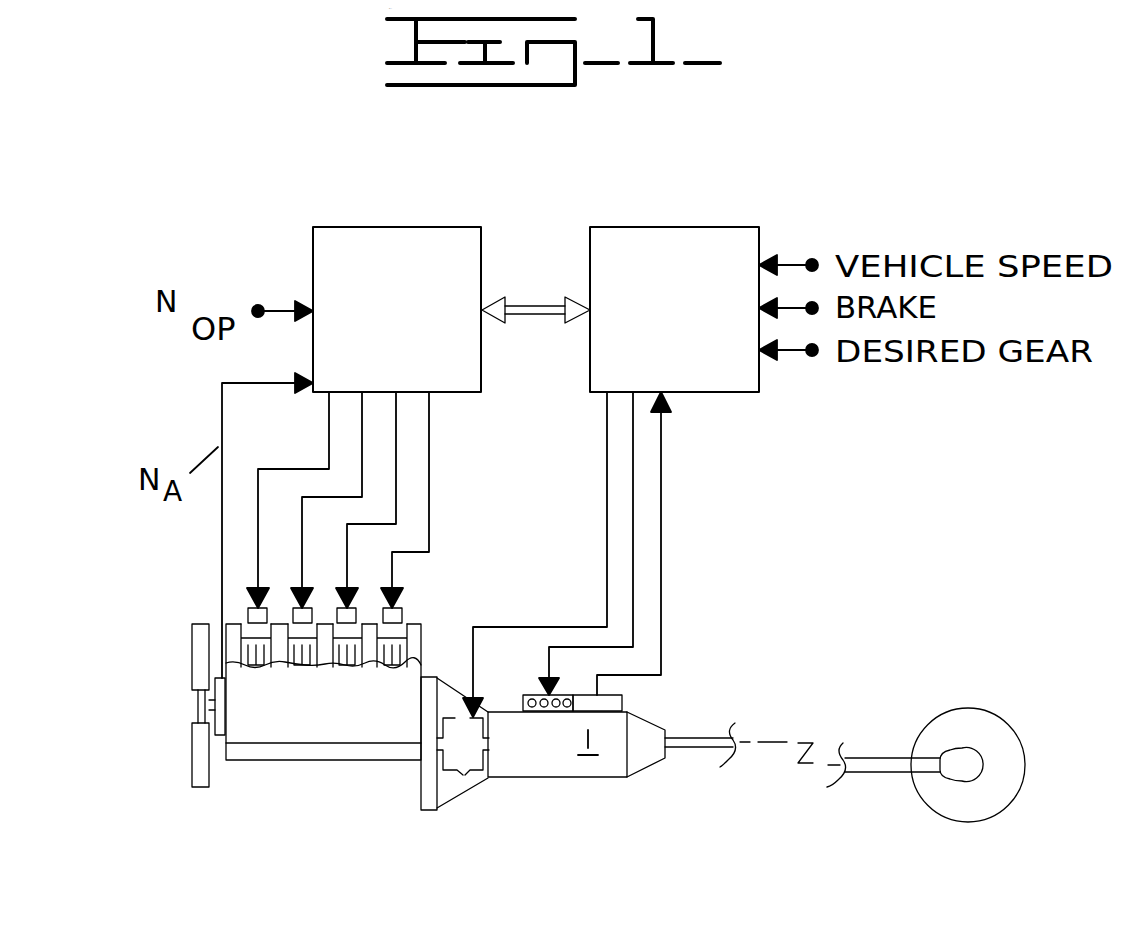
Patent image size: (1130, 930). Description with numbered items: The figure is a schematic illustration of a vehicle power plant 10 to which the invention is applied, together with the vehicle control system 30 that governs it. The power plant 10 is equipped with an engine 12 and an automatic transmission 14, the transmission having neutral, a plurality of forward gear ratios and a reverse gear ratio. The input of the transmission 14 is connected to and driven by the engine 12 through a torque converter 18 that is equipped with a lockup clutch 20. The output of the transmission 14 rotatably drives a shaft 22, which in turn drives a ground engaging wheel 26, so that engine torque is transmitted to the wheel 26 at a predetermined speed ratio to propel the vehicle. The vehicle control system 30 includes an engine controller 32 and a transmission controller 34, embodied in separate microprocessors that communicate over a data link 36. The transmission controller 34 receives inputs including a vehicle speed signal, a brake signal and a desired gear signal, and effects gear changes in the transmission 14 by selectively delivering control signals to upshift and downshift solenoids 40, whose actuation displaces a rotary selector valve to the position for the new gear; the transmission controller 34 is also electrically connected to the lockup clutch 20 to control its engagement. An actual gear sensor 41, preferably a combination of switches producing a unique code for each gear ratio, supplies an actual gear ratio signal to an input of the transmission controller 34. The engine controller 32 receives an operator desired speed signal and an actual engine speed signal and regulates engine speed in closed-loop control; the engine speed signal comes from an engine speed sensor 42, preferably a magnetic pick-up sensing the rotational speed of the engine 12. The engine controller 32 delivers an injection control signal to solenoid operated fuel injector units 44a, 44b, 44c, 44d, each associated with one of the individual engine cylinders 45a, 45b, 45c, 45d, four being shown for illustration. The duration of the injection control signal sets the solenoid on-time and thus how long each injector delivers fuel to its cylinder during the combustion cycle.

The vehicle power plant 10 is at (155, 838).
The engine 12 is at (307, 762).
The automatic transmission 14 is at (548, 778).
The torque converter 18 is at (443, 807).
The lockup clutch 20 is at (479, 794).
The shaft 22 is at (702, 752).
The ground engaging wheel 26 is at (942, 815).
The vehicle control system 30 is at (835, 128).
The engine controller 32 is at (413, 227).
The transmission controller 34 is at (733, 227).
The data link 36 is at (520, 315).
The upshift and downshift solenoids 40 is at (523, 698).
The actual gear sensor 41 is at (620, 703).
The engine speed sensor 42 is at (221, 736).
The solenoid operated fuel injector unit 44a is at (247, 607).
The solenoid operated fuel injector unit 44b is at (275, 604).
The solenoid operated fuel injector unit 44c is at (357, 607).
The solenoid operated fuel injector unit 44d is at (401, 608).
The engine cylinder 45a is at (250, 645).
The engine cylinder 45b is at (297, 662).
The engine cylinder 45c is at (338, 652).
The engine cylinder 45d is at (405, 638).